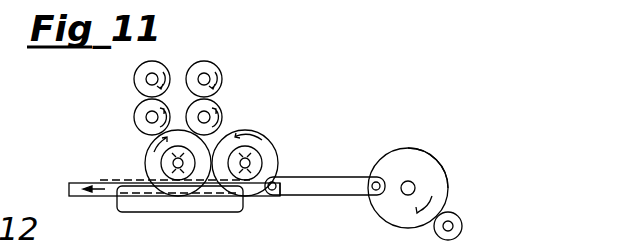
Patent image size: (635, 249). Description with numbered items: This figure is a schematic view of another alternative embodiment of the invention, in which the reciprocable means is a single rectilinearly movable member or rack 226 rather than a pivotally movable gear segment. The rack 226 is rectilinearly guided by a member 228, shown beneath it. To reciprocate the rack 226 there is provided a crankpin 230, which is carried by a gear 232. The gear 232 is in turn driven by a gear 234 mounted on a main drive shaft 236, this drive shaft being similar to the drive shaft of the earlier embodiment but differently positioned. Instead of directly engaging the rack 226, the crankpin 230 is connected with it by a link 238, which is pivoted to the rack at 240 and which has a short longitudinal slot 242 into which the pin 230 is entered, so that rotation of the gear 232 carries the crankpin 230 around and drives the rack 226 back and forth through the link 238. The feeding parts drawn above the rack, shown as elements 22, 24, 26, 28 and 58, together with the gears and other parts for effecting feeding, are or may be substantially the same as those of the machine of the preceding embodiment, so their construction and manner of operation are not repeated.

The feed roller 22 is at (218, 68).
The feed roller 24 is at (219, 113).
The feed roller 26 is at (134, 79).
The feed roller 28 is at (134, 115).
The drive roller 58 is at (149, 150).
The rack 226 is at (103, 183).
The guide member 228 is at (203, 212).
The crankpin 230 is at (368, 205).
The gear 232 is at (434, 156).
The drive gear 234 is at (460, 218).
The main drive shaft 236 is at (452, 230).
The link 238 is at (300, 177).
The pivot 240 is at (275, 190).
The longitudinal slot 242 is at (402, 165).